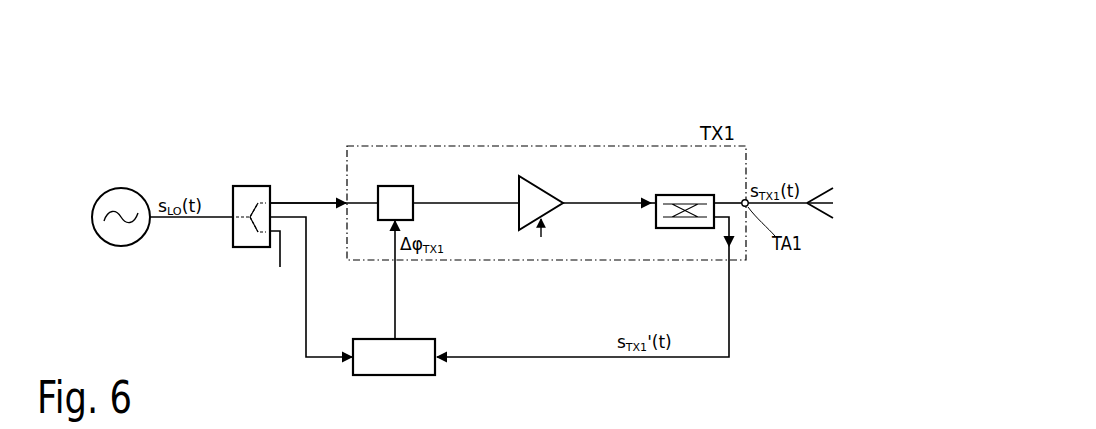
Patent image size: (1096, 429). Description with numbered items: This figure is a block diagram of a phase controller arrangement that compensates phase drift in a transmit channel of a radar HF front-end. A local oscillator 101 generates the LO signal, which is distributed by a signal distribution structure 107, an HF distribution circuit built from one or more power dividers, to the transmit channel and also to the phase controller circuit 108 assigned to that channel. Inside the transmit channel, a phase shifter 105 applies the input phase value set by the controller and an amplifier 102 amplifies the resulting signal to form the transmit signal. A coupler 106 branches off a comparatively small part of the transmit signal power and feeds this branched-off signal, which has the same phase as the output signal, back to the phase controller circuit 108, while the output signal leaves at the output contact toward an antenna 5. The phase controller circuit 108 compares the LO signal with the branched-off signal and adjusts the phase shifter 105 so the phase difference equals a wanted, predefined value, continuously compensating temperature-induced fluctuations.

The local oscillator 101 is at (140, 189).
The signal distribution structure 107 is at (256, 186).
The phase shifter 105 is at (396, 187).
The amplifier 102 is at (549, 190).
The coupler 106 is at (672, 195).
The phase controller circuit 108 is at (424, 338).
The antenna 5 is at (818, 192).